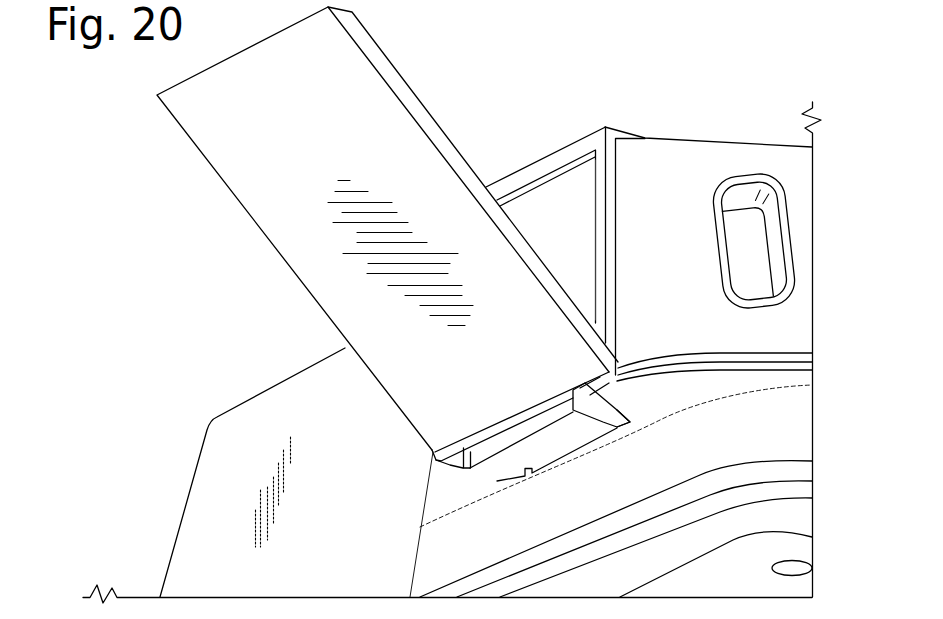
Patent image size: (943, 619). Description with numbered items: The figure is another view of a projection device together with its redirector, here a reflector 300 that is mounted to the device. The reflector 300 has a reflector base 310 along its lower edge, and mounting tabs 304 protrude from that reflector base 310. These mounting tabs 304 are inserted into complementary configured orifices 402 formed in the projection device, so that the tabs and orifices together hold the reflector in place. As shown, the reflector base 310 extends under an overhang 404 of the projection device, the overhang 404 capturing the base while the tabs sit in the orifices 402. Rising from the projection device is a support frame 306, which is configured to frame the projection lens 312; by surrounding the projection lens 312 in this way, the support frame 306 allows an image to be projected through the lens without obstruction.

The reflector 300 is at (262, 238).
The mounting tabs 304 is at (622, 436).
The support frame 306 is at (613, 157).
The reflector base 310 is at (498, 472).
The projection lens 312 is at (555, 210).
The orifices 402 is at (643, 424).
The overhang 404 is at (653, 388).